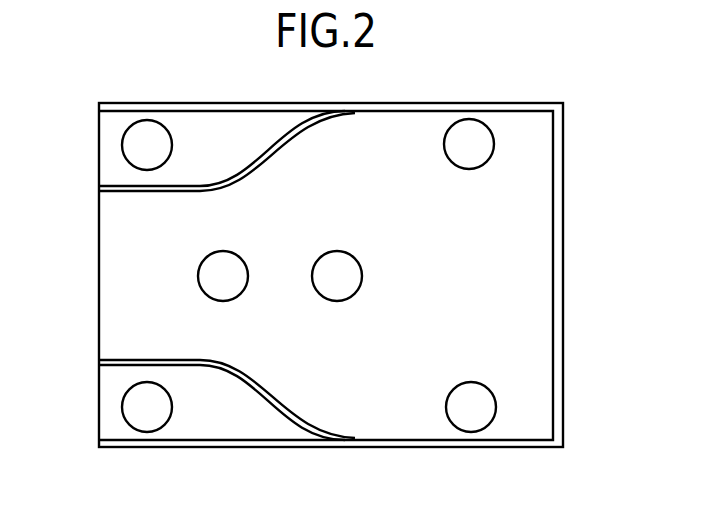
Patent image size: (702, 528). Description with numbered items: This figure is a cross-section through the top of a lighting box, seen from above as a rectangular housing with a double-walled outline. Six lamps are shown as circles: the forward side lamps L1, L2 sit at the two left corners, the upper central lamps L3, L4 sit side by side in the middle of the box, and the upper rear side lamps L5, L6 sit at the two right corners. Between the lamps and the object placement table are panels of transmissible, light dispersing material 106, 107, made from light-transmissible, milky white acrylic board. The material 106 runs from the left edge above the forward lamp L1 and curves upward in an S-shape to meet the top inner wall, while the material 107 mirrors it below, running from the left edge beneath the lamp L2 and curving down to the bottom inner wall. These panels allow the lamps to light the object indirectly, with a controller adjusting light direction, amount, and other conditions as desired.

The transmissible, light dispersing material 106 is at (268, 153).
The transmissible, light dispersing material 107 is at (280, 404).
The forward side lamp L1 is at (147, 145).
The forward side lamp L2 is at (147, 407).
The upper central lamp L3 is at (223, 276).
The upper central lamp L4 is at (337, 276).
The upper rear side lamp L5 is at (469, 144).
The upper rear side lamp L6 is at (471, 407).